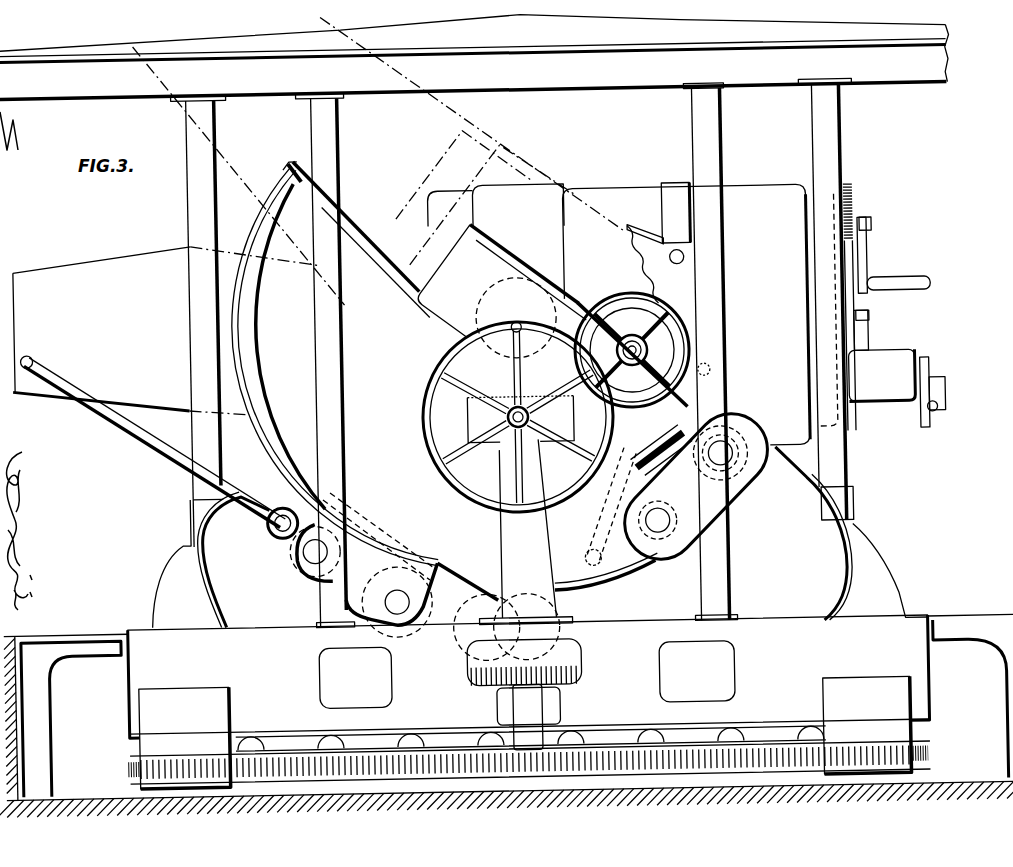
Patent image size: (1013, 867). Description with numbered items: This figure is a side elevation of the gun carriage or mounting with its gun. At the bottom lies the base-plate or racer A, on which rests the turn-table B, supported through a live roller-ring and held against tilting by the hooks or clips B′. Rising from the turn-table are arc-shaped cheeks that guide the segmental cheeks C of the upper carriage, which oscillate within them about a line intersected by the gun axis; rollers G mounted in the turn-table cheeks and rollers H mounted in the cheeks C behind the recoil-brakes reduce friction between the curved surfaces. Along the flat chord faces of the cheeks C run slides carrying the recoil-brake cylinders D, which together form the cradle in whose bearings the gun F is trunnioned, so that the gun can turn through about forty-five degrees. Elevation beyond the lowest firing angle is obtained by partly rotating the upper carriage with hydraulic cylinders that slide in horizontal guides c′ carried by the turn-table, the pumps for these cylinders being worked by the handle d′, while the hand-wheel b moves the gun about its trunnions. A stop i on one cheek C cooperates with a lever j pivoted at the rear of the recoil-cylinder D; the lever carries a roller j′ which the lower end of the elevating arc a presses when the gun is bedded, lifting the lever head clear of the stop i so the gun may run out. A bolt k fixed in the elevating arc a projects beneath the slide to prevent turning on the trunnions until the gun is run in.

The turn-table B is at (527, 594).
The hooks or clips B′ is at (525, 731).
The base-plate or racer A is at (529, 770).
The segmental cheeks C is at (334, 371).
The horizontal guides c′ is at (462, 207).
The recoil-brake cylinders D is at (550, 316).
The gun F is at (686, 314).
The elevating arc a is at (655, 264).
The hand-wheel b is at (615, 294).
The lever j is at (517, 397).
The roller j′ is at (641, 463).
The stop i is at (520, 419).
The bolt or stop k is at (712, 373).
The rollers G is at (425, 592).
The rollers H is at (695, 486).
The handle d′ is at (144, 435).